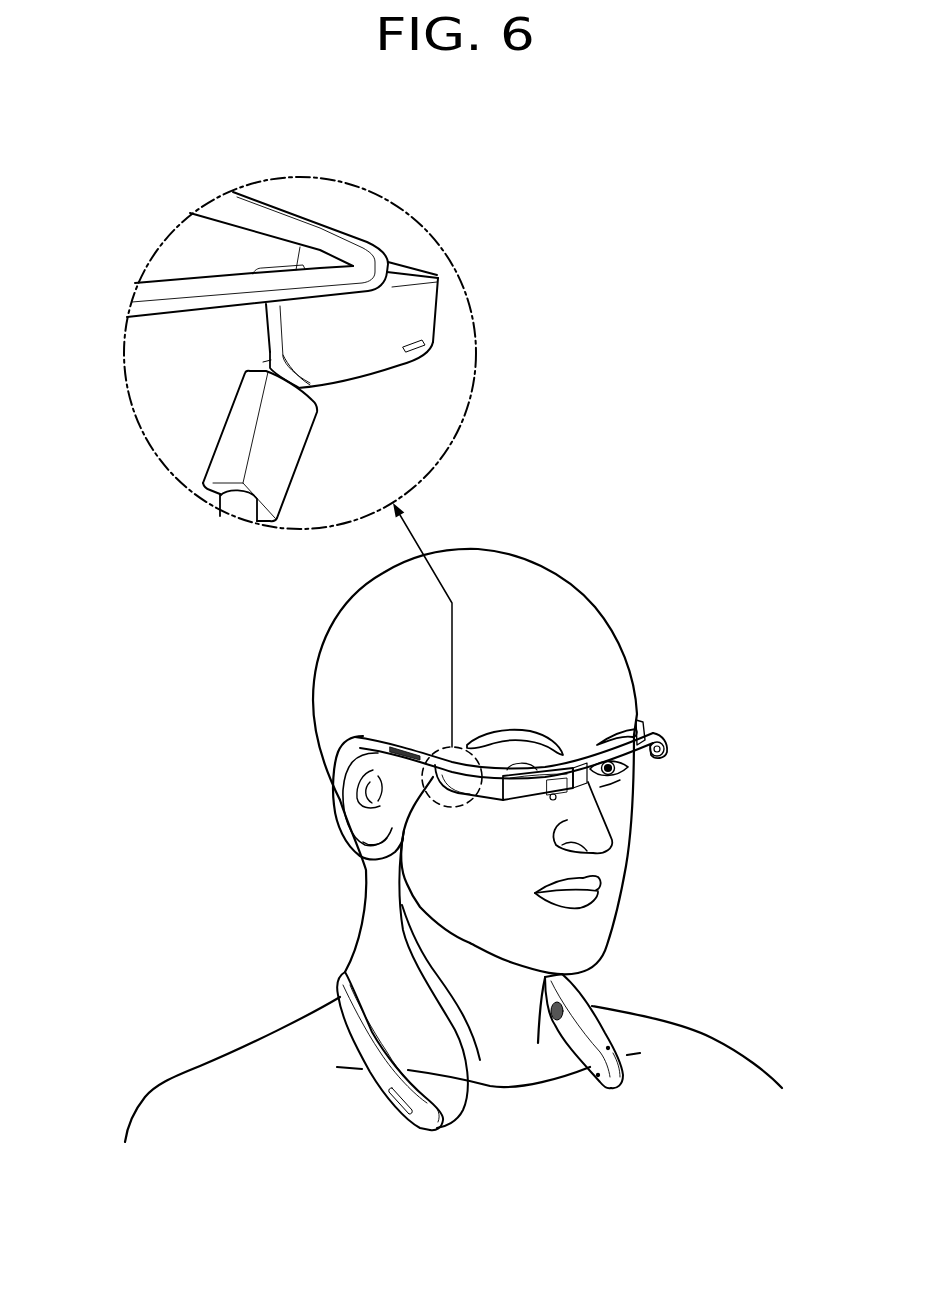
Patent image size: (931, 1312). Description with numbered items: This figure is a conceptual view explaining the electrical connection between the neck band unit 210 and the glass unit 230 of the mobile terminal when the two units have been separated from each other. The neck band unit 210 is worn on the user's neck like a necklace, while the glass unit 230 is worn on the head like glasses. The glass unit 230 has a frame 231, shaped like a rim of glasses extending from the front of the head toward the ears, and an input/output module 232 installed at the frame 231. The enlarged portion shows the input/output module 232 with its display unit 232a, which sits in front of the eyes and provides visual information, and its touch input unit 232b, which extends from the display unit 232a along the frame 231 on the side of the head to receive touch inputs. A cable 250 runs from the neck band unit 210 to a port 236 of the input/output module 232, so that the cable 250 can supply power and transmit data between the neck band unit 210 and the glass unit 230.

The neck band unit 210 is at (385, 1087).
The glass unit 230 is at (655, 728).
The frame 231 is at (323, 232).
The input/output module 232 is at (432, 317).
The display unit 232a is at (405, 265).
The touch input unit 232b is at (427, 318).
The port 236 is at (266, 362).
The cable 250 is at (240, 427).